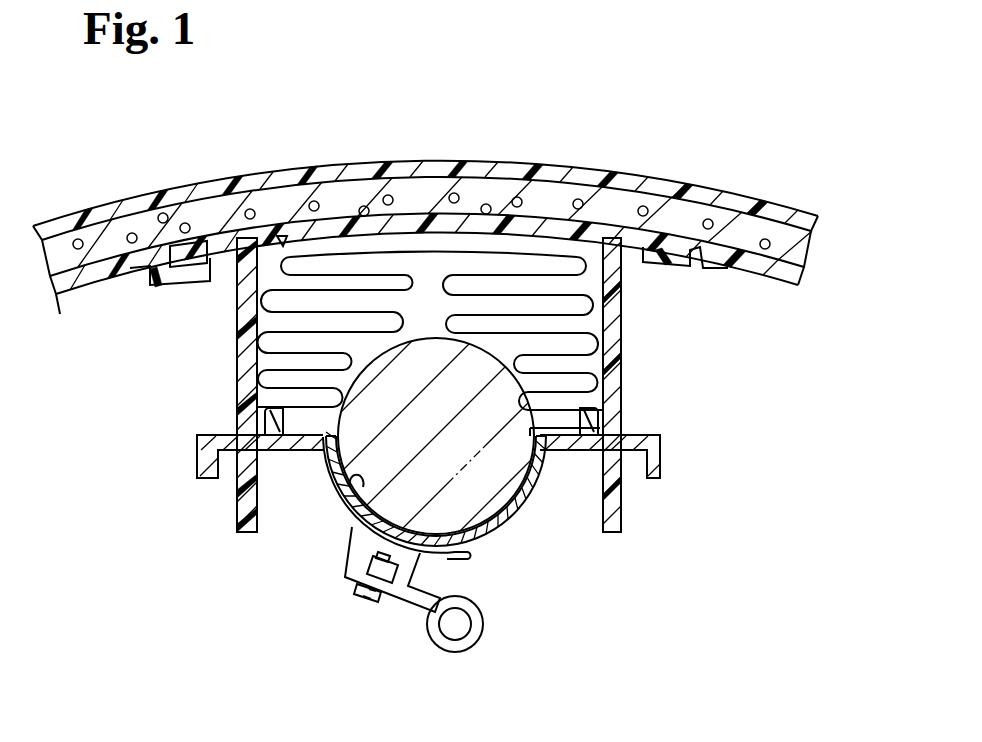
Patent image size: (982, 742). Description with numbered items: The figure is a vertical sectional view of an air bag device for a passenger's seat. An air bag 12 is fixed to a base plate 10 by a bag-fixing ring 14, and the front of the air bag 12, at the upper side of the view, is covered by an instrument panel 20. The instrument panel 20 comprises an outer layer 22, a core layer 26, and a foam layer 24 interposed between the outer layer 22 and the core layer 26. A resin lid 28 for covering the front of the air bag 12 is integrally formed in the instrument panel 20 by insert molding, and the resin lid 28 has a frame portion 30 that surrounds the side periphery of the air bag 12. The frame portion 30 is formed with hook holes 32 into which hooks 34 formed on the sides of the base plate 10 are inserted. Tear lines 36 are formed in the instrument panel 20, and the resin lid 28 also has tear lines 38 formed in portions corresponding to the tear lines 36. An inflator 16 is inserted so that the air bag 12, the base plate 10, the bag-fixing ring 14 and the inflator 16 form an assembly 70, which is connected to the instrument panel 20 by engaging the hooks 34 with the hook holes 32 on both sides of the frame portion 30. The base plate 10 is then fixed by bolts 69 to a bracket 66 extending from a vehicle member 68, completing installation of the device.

The base plate 10 is at (350, 530).
The air bag 12 is at (415, 385).
The bag-fixing ring 14 is at (350, 520).
The inflator 16 is at (472, 488).
The instrument panel 20 is at (733, 2).
The outer layer 22 is at (425, 200).
The foam layer 24 is at (431, 226).
The core layer 26 is at (427, 254).
The resin lid 28 is at (222, 256).
The frame portion 30 is at (617, 312).
The hook holes 32 is at (243, 463).
The hooks 34 is at (197, 453).
The tear lines 36 is at (273, 190).
The tear lines 38 is at (279, 240).
The bracket 66 is at (407, 597).
The vehicle member 68 is at (485, 640).
The bolts 69 is at (363, 600).
The assembly 70 is at (524, 519).